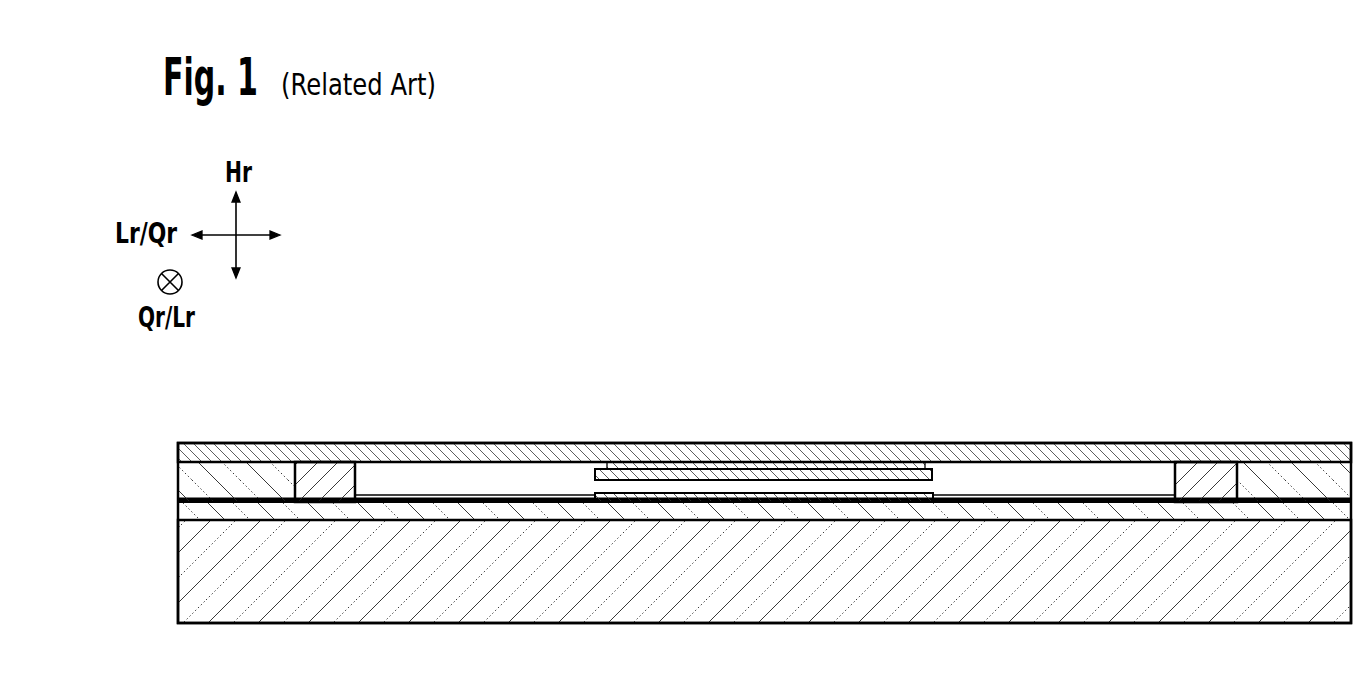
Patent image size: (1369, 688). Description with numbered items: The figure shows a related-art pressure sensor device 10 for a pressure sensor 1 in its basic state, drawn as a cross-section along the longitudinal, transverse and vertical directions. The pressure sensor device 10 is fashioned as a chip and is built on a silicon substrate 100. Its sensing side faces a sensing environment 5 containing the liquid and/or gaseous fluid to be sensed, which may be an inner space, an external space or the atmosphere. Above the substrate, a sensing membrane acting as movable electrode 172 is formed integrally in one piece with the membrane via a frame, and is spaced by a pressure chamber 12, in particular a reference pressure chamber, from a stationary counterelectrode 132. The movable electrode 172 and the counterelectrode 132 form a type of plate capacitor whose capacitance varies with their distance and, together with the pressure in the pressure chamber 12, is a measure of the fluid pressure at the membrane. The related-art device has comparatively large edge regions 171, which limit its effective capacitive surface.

The pressure sensor device 10 is at (439, 414).
The silicon substrate 100 is at (1253, 612).
The pressure sensor 1 is at (265, 683).
The sensing environment 5 is at (597, 393).
The pressure chamber 12 is at (522, 473).
The edge regions 171 is at (954, 452).
The movable electrode 172 is at (770, 452).
The counterelectrode 132 is at (852, 494).